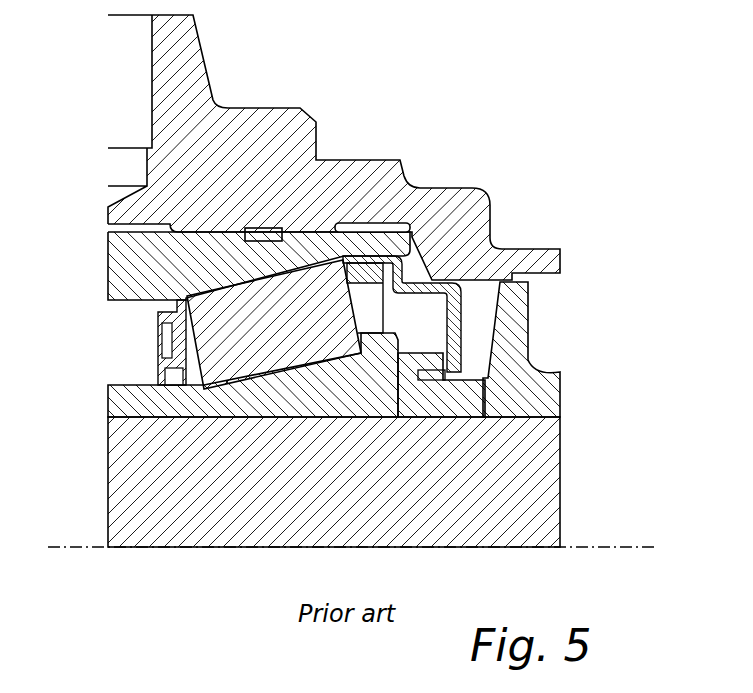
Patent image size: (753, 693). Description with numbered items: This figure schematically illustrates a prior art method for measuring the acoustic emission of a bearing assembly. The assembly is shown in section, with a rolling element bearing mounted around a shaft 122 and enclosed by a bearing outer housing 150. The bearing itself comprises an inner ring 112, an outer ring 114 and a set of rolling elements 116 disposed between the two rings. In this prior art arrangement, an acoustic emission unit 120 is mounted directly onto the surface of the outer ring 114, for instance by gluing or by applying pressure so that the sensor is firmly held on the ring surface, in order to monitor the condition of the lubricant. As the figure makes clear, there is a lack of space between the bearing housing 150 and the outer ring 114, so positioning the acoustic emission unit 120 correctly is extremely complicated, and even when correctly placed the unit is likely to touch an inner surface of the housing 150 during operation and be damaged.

The bearing outer housing 150 is at (202, 143).
The acoustic emission unit 120 is at (263, 234).
The outer ring 114 is at (414, 235).
The rolling elements 116 is at (257, 356).
The inner ring 112 is at (373, 378).
The shaft 122 is at (527, 502).